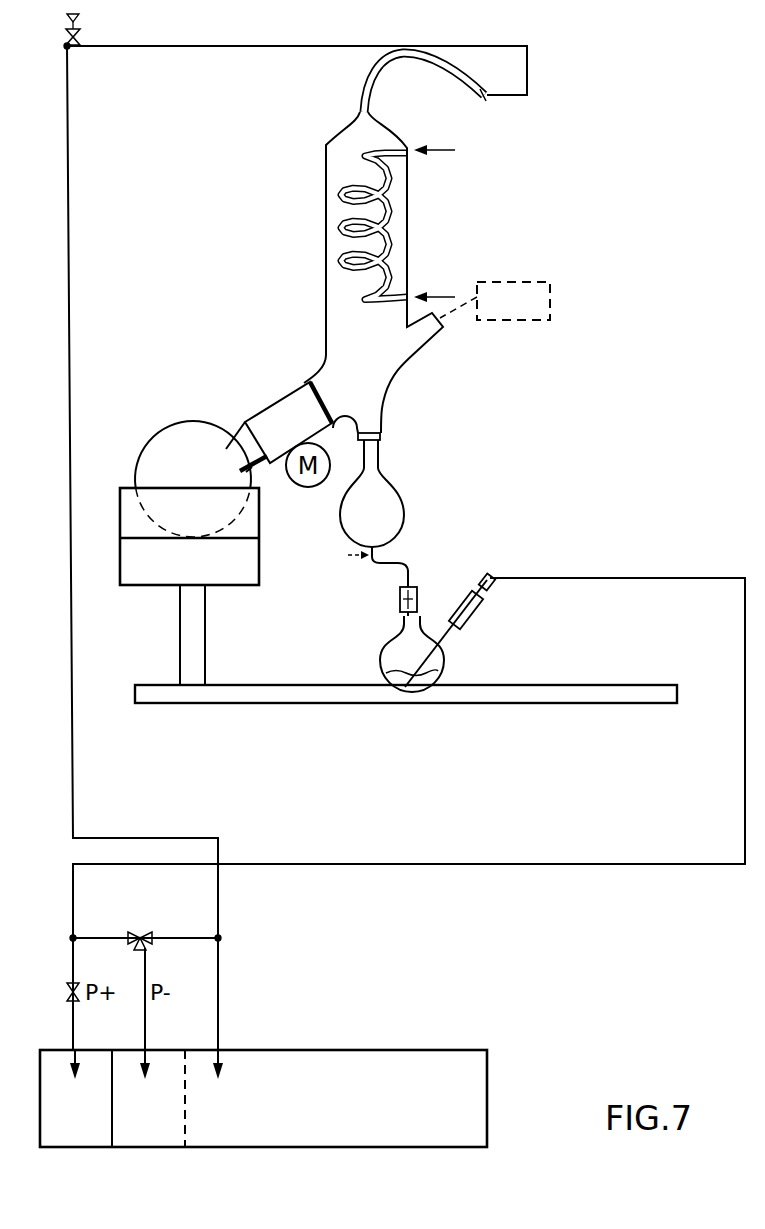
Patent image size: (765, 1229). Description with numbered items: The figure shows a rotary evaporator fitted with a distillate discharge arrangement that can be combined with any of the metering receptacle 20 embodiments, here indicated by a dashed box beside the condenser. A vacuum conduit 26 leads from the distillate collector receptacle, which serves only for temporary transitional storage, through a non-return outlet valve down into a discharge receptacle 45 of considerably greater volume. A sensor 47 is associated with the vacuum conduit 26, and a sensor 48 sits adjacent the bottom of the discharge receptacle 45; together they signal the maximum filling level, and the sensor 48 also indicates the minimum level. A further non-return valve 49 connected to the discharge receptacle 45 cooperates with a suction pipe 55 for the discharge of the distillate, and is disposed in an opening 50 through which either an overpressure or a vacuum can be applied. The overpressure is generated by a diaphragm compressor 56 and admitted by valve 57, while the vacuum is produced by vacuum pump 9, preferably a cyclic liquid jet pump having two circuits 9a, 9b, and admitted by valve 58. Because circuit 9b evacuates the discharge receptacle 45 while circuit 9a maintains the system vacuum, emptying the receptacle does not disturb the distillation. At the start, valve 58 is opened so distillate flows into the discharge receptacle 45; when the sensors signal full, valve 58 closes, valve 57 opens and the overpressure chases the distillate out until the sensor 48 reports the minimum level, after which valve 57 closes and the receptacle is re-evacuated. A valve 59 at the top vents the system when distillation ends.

The venting valve 59 is at (80, 37).
The metering receptacle 20 is at (497, 282).
The vacuum conduit 26 is at (400, 562).
The sensor 47 is at (362, 563).
The suction pipe 55 is at (400, 655).
The non-return valve 49 is at (497, 590).
The opening 50 is at (486, 619).
The discharge receptacle 45 is at (445, 655).
The sensor 48 is at (463, 675).
The valve 57 is at (78, 983).
The valve 58 is at (145, 928).
The diaphragm compressor 56 is at (55, 1072).
The vacuum pump 9 is at (368, 1062).
The first circuit 9a is at (268, 1065).
The second circuit 9b is at (170, 1065).